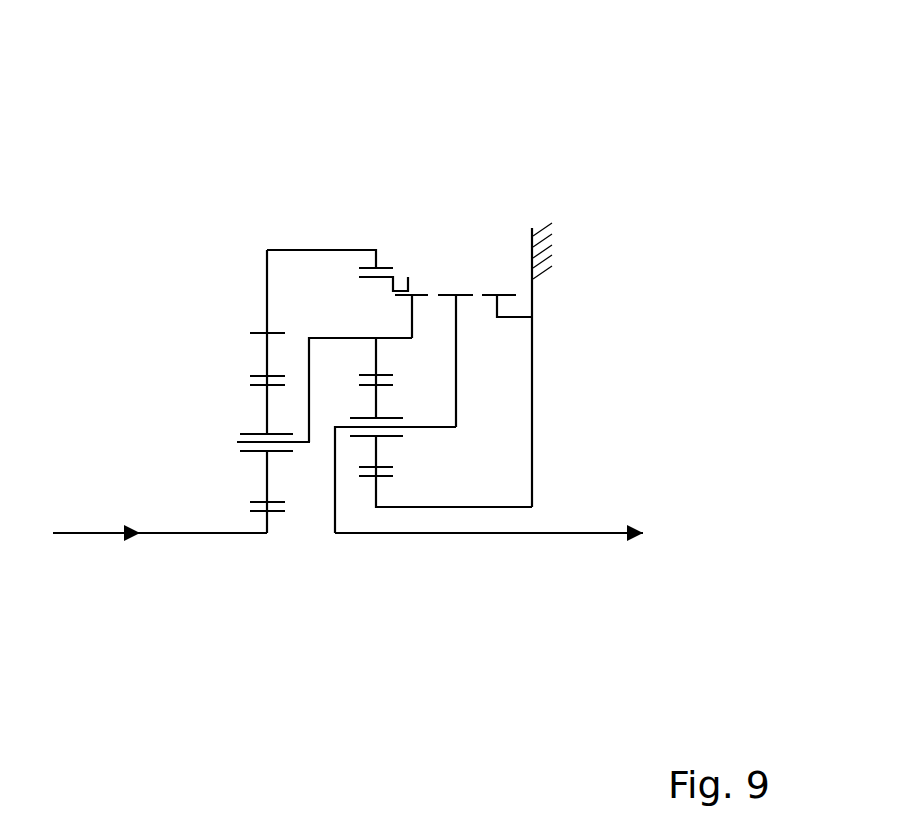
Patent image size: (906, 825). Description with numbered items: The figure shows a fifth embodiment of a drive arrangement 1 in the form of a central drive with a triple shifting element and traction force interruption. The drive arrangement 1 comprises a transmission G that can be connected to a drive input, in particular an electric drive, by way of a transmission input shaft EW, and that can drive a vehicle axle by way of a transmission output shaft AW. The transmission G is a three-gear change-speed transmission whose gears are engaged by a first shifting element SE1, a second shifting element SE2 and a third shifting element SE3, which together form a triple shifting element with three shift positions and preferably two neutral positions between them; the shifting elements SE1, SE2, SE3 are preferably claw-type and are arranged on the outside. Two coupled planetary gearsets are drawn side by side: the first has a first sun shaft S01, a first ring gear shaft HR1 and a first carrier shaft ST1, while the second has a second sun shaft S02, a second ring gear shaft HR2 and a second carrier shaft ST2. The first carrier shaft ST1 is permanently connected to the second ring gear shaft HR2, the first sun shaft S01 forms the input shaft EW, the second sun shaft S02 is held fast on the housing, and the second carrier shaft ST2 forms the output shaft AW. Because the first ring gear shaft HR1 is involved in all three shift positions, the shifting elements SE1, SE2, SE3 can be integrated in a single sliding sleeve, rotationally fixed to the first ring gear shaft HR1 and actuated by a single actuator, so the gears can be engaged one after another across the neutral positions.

The transmission G is at (130, 165).
The drive arrangement 1 is at (597, 195).
The first ring gear shaft HR1 is at (278, 248).
The second ring gear shaft HR2 is at (328, 337).
The first shifting element SE1 is at (498, 242).
The second shifting element SE2 is at (455, 242).
The third shifting element SE3 is at (412, 242).
The transmission input shaft EW is at (92, 535).
The transmission output shaft AW is at (593, 533).
The first sun shaft S01 is at (235, 535).
The second sun shaft S02 is at (452, 507).
The first carrier shaft ST1 is at (303, 447).
The second carrier shaft ST2 is at (522, 533).